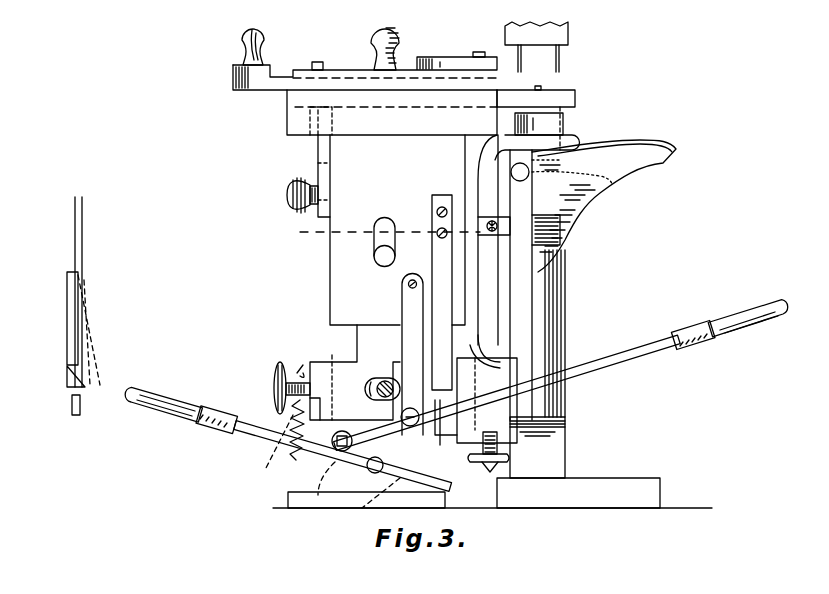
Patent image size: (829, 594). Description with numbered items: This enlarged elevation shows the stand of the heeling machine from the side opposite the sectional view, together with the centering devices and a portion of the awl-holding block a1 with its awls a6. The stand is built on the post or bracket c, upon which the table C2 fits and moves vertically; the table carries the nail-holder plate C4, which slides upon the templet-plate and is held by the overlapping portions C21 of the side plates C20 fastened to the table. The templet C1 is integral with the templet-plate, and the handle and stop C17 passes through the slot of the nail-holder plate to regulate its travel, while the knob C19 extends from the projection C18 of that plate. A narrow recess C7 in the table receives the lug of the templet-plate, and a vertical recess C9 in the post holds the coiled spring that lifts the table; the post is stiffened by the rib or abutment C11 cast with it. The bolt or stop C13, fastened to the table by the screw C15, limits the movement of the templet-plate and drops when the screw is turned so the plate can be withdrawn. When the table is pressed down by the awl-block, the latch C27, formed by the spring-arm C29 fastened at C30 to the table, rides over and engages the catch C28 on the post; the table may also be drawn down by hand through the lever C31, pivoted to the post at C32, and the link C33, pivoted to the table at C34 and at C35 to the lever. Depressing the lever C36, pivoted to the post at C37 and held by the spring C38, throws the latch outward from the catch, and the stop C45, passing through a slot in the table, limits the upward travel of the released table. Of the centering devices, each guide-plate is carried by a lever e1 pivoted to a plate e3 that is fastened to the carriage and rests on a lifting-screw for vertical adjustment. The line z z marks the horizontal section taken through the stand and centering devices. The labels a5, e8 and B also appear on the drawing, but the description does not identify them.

The table C2 is at (365, 84).
The nail-holder plate C4 is at (326, 258).
The handle or knob C19 is at (265, 43).
The handle and stop C17 is at (395, 39).
The awl-holding block a1 is at (536, 33).
The pin a5 is at (527, 58).
The awls a6 is at (565, 58).
The templet C1 is at (550, 111).
The rib or abutment C11 is at (573, 127).
The bolt or stop C13 is at (318, 155).
The screw C15 is at (286, 197).
The post or bracket c is at (389, 232).
The stop C45 is at (372, 248).
The link C33 is at (412, 355).
The pivot of link to table C34 is at (412, 278).
The spring-arm C29 is at (443, 292).
The fastening point of spring-arm C30 is at (437, 213).
The block with screw e8 is at (488, 235).
The plate e3 is at (495, 345).
The lever e1 is at (521, 285).
The vertical hole or recess C9 is at (515, 222).
The section line z z is at (604, 206).
The column B is at (560, 333).
The narrow recess C7 is at (500, 443).
The projection C18 is at (298, 373).
The side plates C20 is at (383, 382).
The overlapping portions C21 is at (361, 381).
The pivot of link to lever C35 is at (388, 415).
The catch C28 is at (216, 362).
The lever C36 is at (227, 441).
The lever C31 is at (561, 375).
The spring C38 is at (288, 439).
The pivot of lever C32 is at (312, 478).
The pivot of lever C37 is at (371, 504).
The latch C27 is at (95, 292).